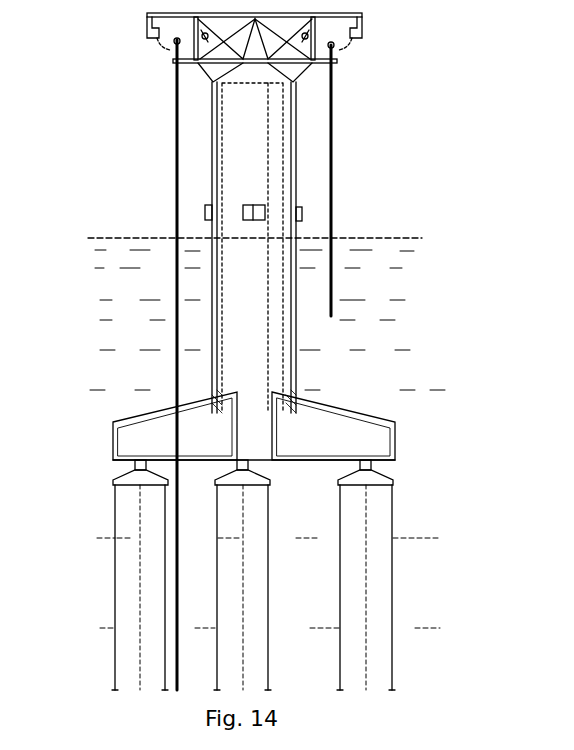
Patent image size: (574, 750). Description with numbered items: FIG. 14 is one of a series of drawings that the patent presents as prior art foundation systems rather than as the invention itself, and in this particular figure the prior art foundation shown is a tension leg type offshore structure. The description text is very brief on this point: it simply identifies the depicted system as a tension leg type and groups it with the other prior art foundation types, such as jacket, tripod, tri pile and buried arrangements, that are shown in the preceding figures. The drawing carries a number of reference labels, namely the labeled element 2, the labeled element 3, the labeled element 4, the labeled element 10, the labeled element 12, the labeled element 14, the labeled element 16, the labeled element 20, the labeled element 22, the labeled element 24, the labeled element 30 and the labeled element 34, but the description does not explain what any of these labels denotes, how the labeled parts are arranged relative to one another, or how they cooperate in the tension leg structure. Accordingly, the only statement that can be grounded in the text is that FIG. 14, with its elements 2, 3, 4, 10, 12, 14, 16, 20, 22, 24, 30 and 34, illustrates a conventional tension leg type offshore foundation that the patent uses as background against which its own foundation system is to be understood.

The section line 2- 2 is at (96, 276).
The section line 3- 3 is at (296, 476).
The section line 4- 4 is at (318, 442).
The base / pile cap 10 is at (143, 432).
The column 12 is at (260, 256).
The truss 14 is at (296, 70).
The top platform 16 is at (346, 50).
The water line 20 is at (132, 236).
The piles 22 is at (164, 578).
The pile connectors 24 is at (113, 472).
The guide posts 30 is at (175, 134).
The column fittings 34 is at (250, 204).